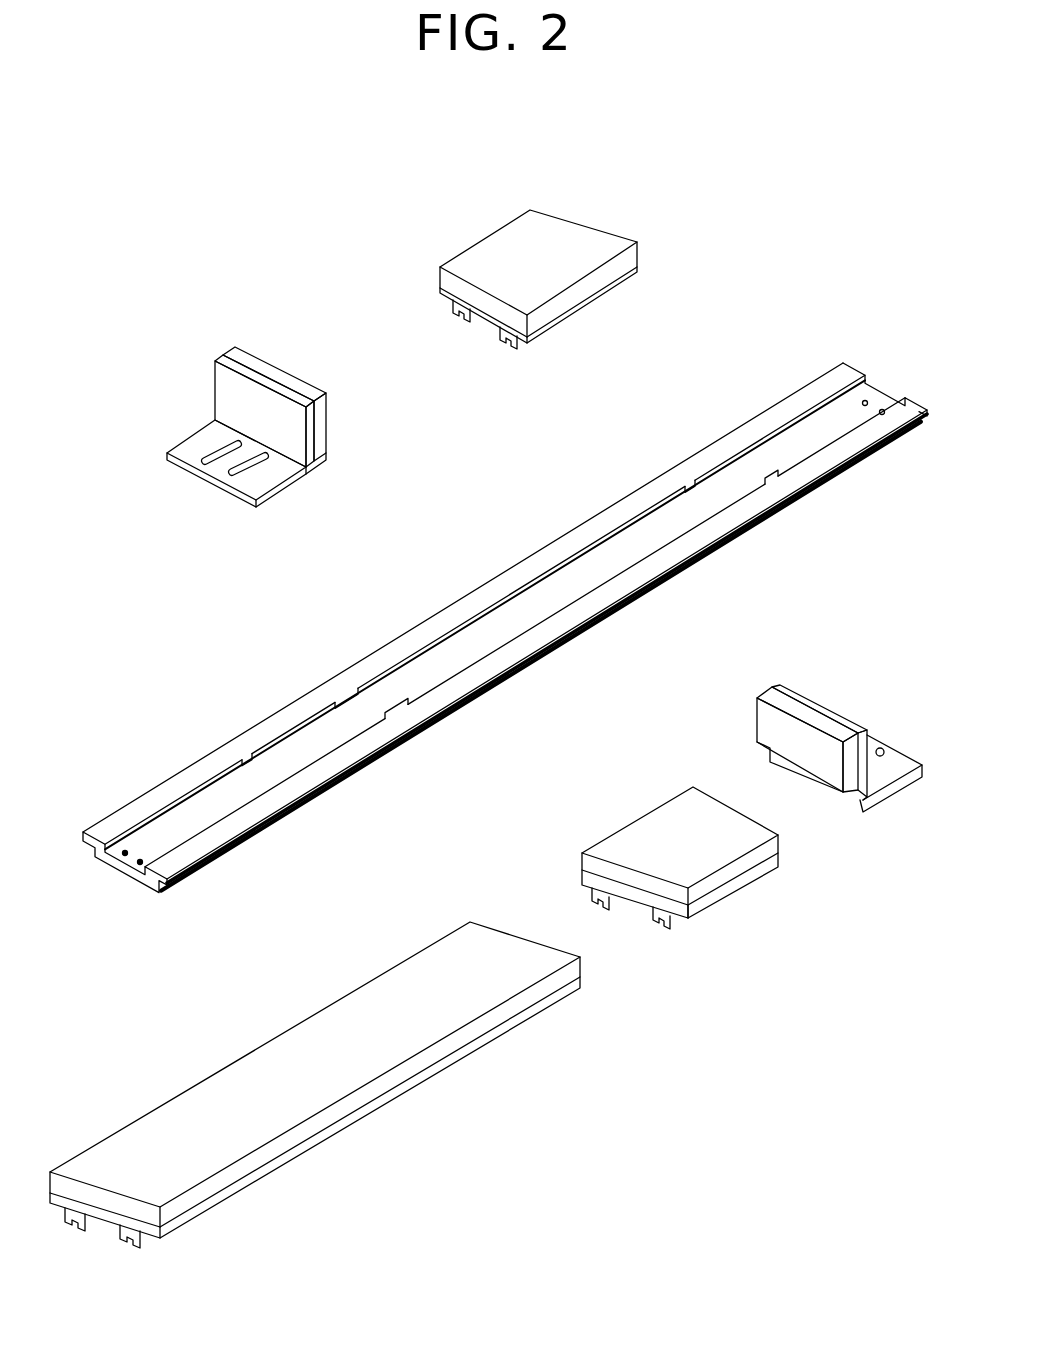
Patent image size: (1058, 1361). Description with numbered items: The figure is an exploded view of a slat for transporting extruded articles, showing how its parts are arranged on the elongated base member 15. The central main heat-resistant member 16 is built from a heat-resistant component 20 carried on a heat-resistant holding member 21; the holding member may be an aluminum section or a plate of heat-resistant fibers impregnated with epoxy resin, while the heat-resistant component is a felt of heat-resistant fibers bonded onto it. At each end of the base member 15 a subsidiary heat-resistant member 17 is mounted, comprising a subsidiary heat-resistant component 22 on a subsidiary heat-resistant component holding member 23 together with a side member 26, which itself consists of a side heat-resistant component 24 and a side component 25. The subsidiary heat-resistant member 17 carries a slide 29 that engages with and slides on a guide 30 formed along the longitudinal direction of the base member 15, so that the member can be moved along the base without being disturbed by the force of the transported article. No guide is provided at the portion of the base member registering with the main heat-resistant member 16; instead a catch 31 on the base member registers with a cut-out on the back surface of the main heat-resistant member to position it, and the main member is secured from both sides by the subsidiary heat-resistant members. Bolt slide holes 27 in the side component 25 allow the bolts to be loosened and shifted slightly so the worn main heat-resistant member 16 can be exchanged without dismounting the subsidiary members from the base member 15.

The base member 15 is at (505, 661).
The main heat-resistant member 16 is at (315, 1085).
The subsidiary heat-resistant member 17 is at (447, 215).
The heat-resistant component 20 is at (417, 1062).
The heat-resistant holding member 21 is at (383, 1098).
The subsidiary heat-resistant component 22 is at (562, 240).
The subsidiary heat-resistant component holding member 23 is at (638, 274).
The side heat-resistant component 24 is at (328, 403).
The side component 25 is at (271, 427).
The side member 26 is at (301, 427).
The bolt slide holes 27 is at (225, 452).
The slide 29 is at (502, 344).
The guide 30 is at (133, 813).
The catch 31 is at (347, 690).